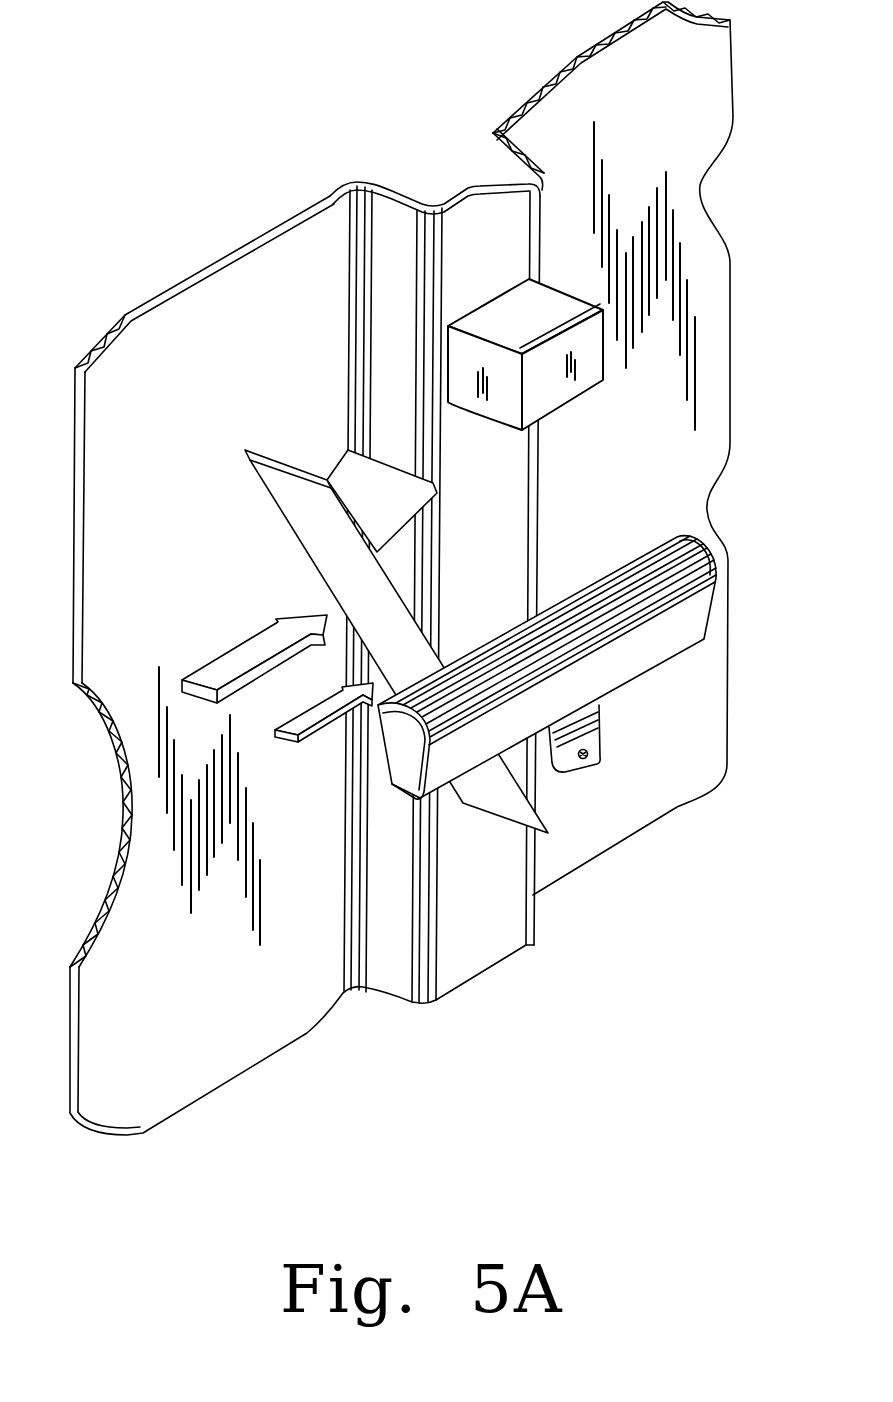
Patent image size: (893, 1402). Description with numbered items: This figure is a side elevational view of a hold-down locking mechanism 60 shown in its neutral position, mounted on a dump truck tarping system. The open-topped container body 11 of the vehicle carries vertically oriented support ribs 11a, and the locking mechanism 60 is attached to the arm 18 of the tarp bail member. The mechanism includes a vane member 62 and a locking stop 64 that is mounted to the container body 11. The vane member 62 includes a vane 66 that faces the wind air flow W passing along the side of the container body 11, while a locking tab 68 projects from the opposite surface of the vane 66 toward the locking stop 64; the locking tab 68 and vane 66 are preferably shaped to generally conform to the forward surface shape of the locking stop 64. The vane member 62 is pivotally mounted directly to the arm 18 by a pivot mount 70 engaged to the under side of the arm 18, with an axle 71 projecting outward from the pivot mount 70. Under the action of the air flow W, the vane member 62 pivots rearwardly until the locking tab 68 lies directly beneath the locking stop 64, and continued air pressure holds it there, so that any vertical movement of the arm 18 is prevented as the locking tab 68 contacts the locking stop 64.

The container body 11 is at (680, 197).
The support ribs 11a is at (388, 228).
The arm 18 is at (663, 544).
The hold-down locking mechanism 60 is at (332, 771).
The vane member 62 is at (365, 583).
The locking stop 64 is at (513, 305).
The vane 66 is at (252, 457).
The locking tab 68 is at (343, 447).
The pivot mount 70 is at (600, 732).
The axle 71 is at (585, 759).
The wind direction W is at (222, 676).